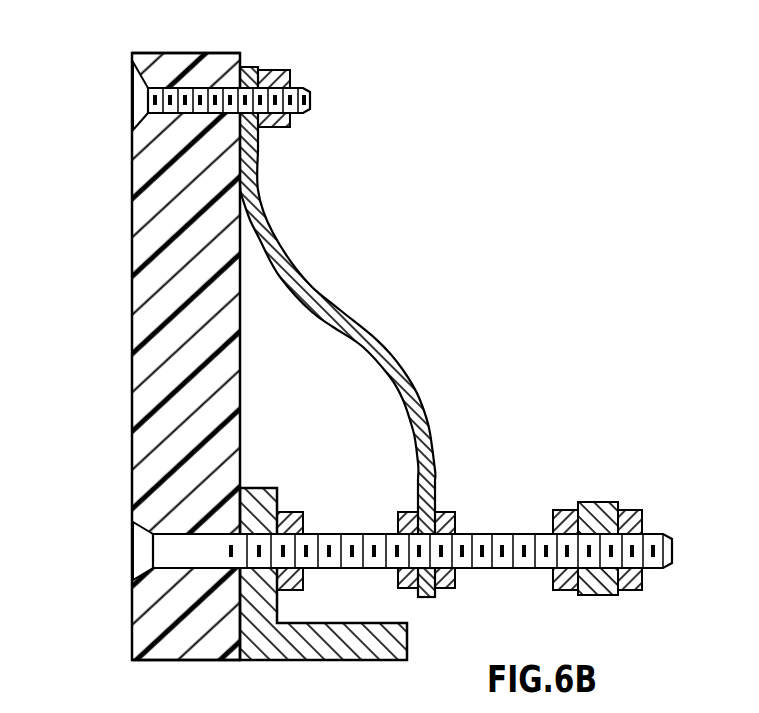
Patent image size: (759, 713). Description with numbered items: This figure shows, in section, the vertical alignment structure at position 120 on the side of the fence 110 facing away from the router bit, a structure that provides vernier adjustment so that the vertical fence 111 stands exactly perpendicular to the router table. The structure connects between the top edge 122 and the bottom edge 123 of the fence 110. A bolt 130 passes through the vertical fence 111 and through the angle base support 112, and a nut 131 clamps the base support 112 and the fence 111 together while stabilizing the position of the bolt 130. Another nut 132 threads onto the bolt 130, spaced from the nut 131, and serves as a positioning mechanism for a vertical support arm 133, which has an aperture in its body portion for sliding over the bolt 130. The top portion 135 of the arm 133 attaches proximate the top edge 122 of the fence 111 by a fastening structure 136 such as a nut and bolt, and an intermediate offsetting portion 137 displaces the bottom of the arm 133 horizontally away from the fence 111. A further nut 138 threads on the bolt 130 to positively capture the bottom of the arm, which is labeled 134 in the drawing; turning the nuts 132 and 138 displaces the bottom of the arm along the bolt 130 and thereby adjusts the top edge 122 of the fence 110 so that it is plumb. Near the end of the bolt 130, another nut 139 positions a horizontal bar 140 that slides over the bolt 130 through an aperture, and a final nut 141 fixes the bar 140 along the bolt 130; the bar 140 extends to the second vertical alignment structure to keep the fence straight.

The fence 110 is at (115, 86).
The vertical fence 111 is at (137, 178).
The base support 112 is at (407, 641).
The vertical alignment structure position 120 is at (532, 446).
The top edge 122 is at (216, 53).
The bottom edge 123 is at (150, 661).
The bolt 130 is at (173, 553).
The nut 131 is at (292, 512).
The nut 132 is at (405, 511).
The vertical support arm 133 is at (378, 344).
The lower end of flange 134 is at (433, 592).
The top portion 135 is at (250, 67).
The fastening structure 136 is at (288, 126).
The intermediate offsetting portion 137 is at (312, 286).
The nut 138 is at (453, 512).
The nut 139 is at (572, 490).
The horizontal bar 140 is at (600, 502).
The nut 141 is at (637, 512).